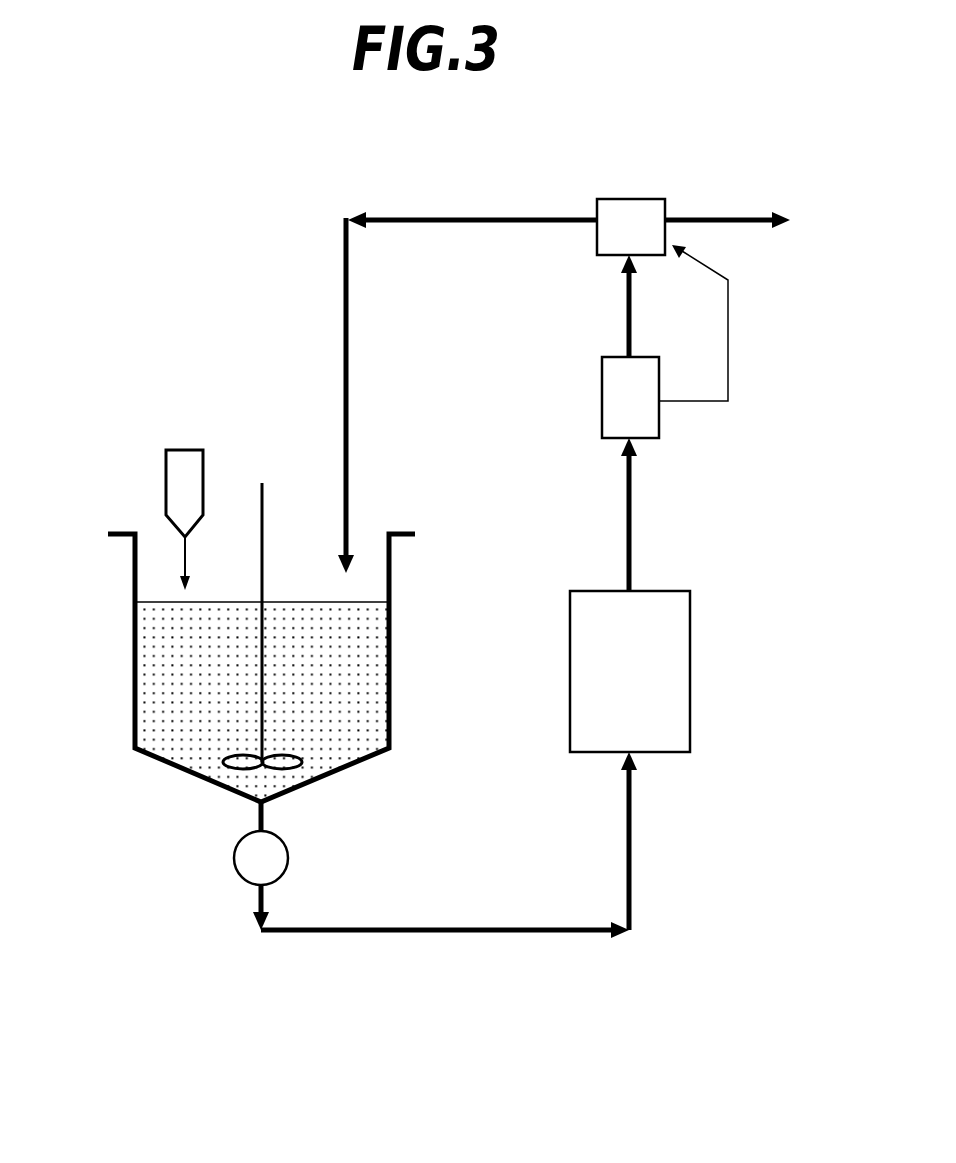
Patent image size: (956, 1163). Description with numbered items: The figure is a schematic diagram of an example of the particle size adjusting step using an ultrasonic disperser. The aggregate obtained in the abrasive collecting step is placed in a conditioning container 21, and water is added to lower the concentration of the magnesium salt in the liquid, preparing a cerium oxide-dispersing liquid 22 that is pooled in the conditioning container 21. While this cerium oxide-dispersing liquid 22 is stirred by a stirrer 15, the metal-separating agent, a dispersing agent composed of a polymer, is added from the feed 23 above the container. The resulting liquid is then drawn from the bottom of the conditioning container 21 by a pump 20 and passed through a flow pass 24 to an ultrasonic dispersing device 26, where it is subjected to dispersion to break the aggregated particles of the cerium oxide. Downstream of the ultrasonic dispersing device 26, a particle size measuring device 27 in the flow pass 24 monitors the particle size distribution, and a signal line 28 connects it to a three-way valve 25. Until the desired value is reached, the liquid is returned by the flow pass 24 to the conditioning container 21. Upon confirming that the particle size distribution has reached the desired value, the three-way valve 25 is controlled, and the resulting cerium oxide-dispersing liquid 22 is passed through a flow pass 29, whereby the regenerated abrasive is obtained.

The stirrer 15 is at (264, 519).
The pump 20 is at (288, 848).
The conditioning container 21 is at (173, 767).
The cerium oxide-dispersing liquid 22 is at (178, 635).
The metal-separating agent feed 23 is at (190, 471).
The flow pass 24 is at (493, 215).
The three-way valve 25 is at (640, 218).
The ultrasonic dispersing device 26 is at (593, 665).
The particle size measuring device 27 is at (623, 397).
The control signal line 28 is at (730, 340).
The flow pass 29 is at (717, 217).